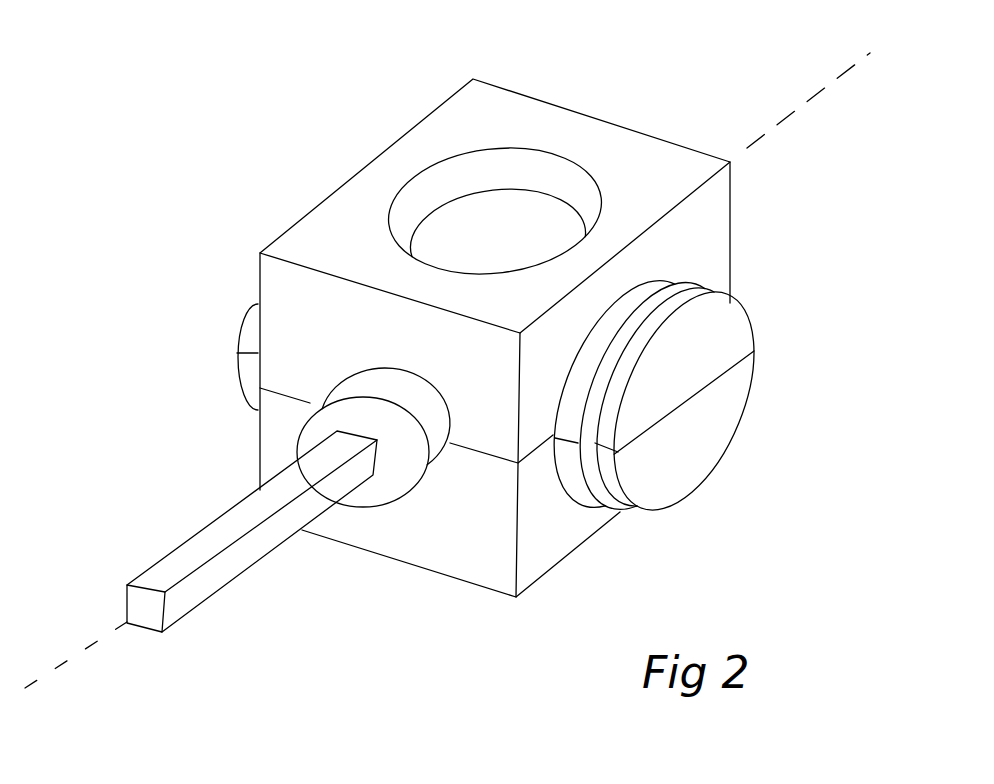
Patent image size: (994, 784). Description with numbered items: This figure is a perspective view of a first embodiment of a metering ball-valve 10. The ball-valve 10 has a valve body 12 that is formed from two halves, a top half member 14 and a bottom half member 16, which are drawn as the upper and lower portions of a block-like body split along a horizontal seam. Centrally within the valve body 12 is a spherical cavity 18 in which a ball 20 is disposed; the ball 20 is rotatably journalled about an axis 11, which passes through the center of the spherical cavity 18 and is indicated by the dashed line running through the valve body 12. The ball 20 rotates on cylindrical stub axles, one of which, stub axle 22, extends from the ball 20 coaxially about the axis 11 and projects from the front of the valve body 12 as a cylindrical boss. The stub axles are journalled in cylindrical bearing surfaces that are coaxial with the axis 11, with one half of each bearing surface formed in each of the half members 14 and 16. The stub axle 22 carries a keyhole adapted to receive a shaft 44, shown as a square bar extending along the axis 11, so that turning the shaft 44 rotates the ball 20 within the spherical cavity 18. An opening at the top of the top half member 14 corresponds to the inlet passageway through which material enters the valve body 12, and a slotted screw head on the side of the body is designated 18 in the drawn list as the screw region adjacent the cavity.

The metering ball-valve 10 is at (210, 145).
The axis 11 is at (65, 665).
The valve body 12 is at (287, 228).
The top half member 14 is at (258, 272).
The bottom half member 16 is at (258, 443).
The spherical cavity 18 is at (668, 401).
The ball 20 is at (540, 218).
The cylindrical stub axle 22 is at (398, 492).
The shaft 44 is at (225, 570).